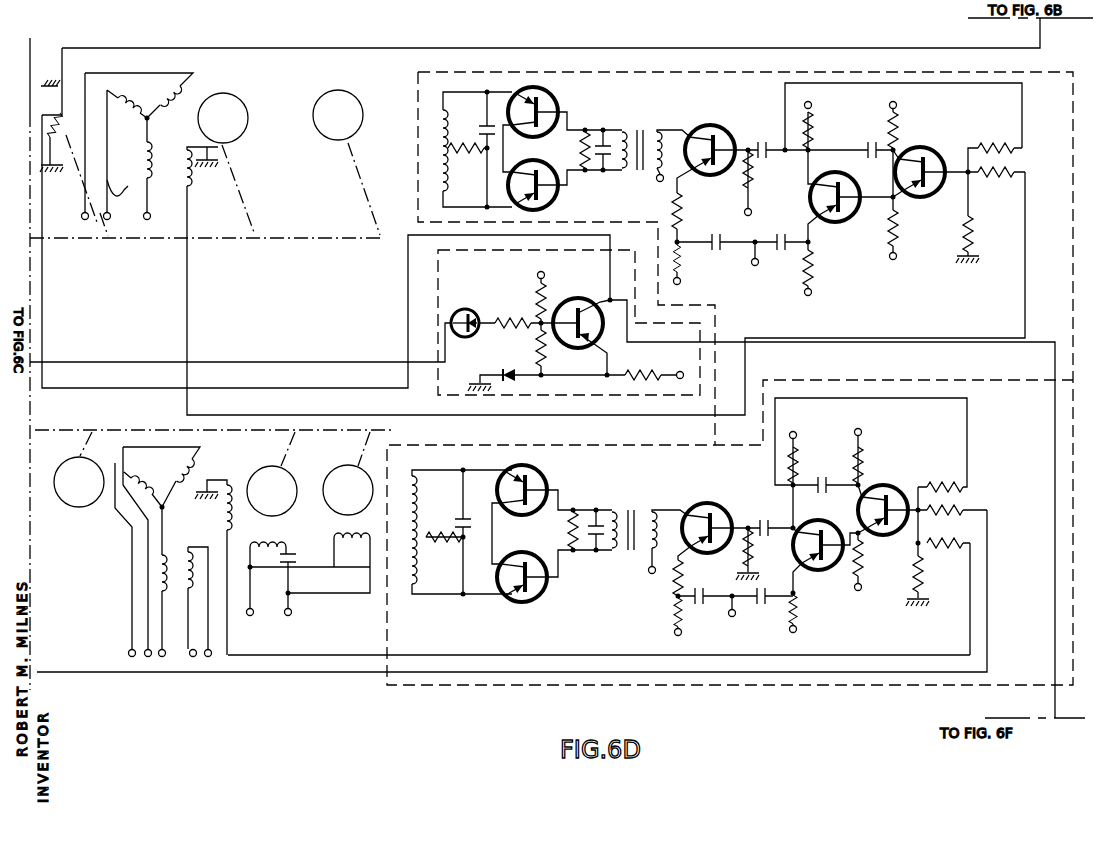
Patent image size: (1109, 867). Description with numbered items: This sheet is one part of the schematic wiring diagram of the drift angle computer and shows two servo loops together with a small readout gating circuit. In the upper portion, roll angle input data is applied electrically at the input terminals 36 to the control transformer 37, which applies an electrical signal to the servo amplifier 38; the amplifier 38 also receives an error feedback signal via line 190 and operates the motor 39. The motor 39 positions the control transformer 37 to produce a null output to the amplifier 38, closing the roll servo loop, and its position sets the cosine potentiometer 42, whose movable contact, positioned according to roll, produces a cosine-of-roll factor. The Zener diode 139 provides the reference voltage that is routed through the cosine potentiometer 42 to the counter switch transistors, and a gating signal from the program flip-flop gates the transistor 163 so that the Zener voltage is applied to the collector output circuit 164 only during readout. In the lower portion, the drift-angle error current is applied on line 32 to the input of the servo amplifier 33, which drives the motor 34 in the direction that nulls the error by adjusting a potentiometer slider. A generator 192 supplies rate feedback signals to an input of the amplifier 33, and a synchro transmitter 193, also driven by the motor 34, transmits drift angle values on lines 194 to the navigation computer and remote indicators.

The cosine potentiometer 42 is at (57, 112).
The input terminals 36 is at (138, 154).
The control transformer 37 is at (244, 100).
The motor 39 is at (360, 96).
The line 190 is at (188, 293).
The collector output circuit 164 is at (611, 272).
The transistor 163 is at (580, 308).
The Zener diode 139 is at (510, 360).
The servo amplifier 38 is at (1073, 235).
The synchro transmitter 193 is at (79, 507).
The lines 194 is at (158, 617).
The generator 192 is at (290, 472).
The motor 34 is at (368, 460).
The line 32 is at (322, 678).
The servo amplifier 33 is at (470, 690).